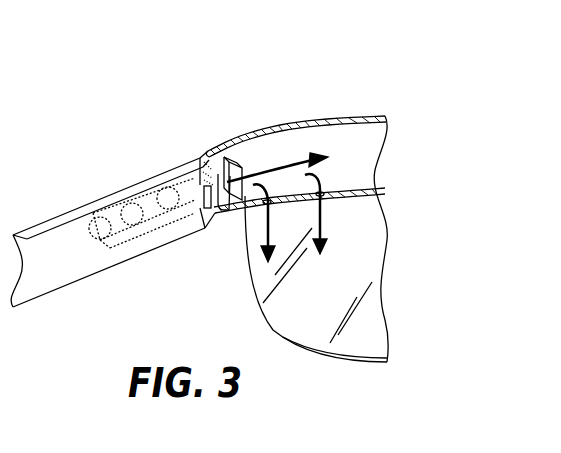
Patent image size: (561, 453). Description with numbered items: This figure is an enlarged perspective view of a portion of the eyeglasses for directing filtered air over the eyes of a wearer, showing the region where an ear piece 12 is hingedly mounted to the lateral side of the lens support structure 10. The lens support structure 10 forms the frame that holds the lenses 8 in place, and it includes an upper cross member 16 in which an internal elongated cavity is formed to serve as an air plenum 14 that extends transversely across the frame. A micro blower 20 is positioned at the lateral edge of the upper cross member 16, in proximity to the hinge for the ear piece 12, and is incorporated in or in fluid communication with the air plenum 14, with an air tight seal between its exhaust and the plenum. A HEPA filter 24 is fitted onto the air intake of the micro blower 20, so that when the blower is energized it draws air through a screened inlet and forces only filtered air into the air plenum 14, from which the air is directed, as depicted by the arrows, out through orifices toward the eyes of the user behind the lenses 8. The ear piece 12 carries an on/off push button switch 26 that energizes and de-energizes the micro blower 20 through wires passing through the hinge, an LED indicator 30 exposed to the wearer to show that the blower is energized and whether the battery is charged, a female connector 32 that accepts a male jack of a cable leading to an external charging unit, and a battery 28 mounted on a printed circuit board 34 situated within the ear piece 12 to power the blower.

The lenses 8 is at (340, 360).
The lens support structure 10 is at (200, 153).
The ear pieces 12 is at (22, 231).
The air plenum 14 is at (268, 152).
The upper cross member 16 is at (362, 115).
The micro blower 20 is at (229, 203).
The HEPA filter 24 is at (238, 166).
The on/off push button switch 26 is at (142, 197).
The battery 28 is at (135, 232).
The LED indicator 30 is at (117, 207).
The female connector 32 is at (93, 217).
The printed circuit board 34 is at (107, 247).